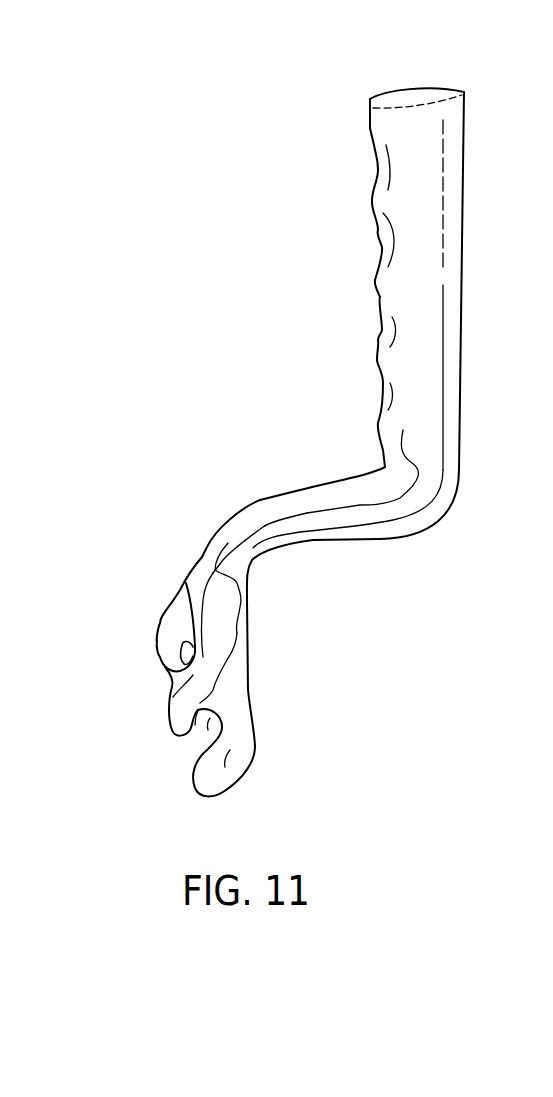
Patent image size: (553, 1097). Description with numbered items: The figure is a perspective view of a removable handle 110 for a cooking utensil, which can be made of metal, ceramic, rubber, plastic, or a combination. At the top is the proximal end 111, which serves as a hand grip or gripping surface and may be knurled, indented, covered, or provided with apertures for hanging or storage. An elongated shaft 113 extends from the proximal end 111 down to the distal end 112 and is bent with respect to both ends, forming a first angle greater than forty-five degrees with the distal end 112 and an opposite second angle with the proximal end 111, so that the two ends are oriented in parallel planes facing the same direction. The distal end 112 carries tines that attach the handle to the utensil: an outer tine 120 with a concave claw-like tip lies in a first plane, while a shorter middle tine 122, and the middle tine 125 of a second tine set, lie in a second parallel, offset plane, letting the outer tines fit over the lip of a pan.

The removable handle 110 is at (204, 198).
The proximal end 111 is at (412, 88).
The distal end 112 is at (201, 549).
The elongated shaft 113 is at (347, 540).
The outer tine 120 is at (243, 778).
The middle tine 122 is at (167, 725).
The middle tine 125 is at (157, 638).